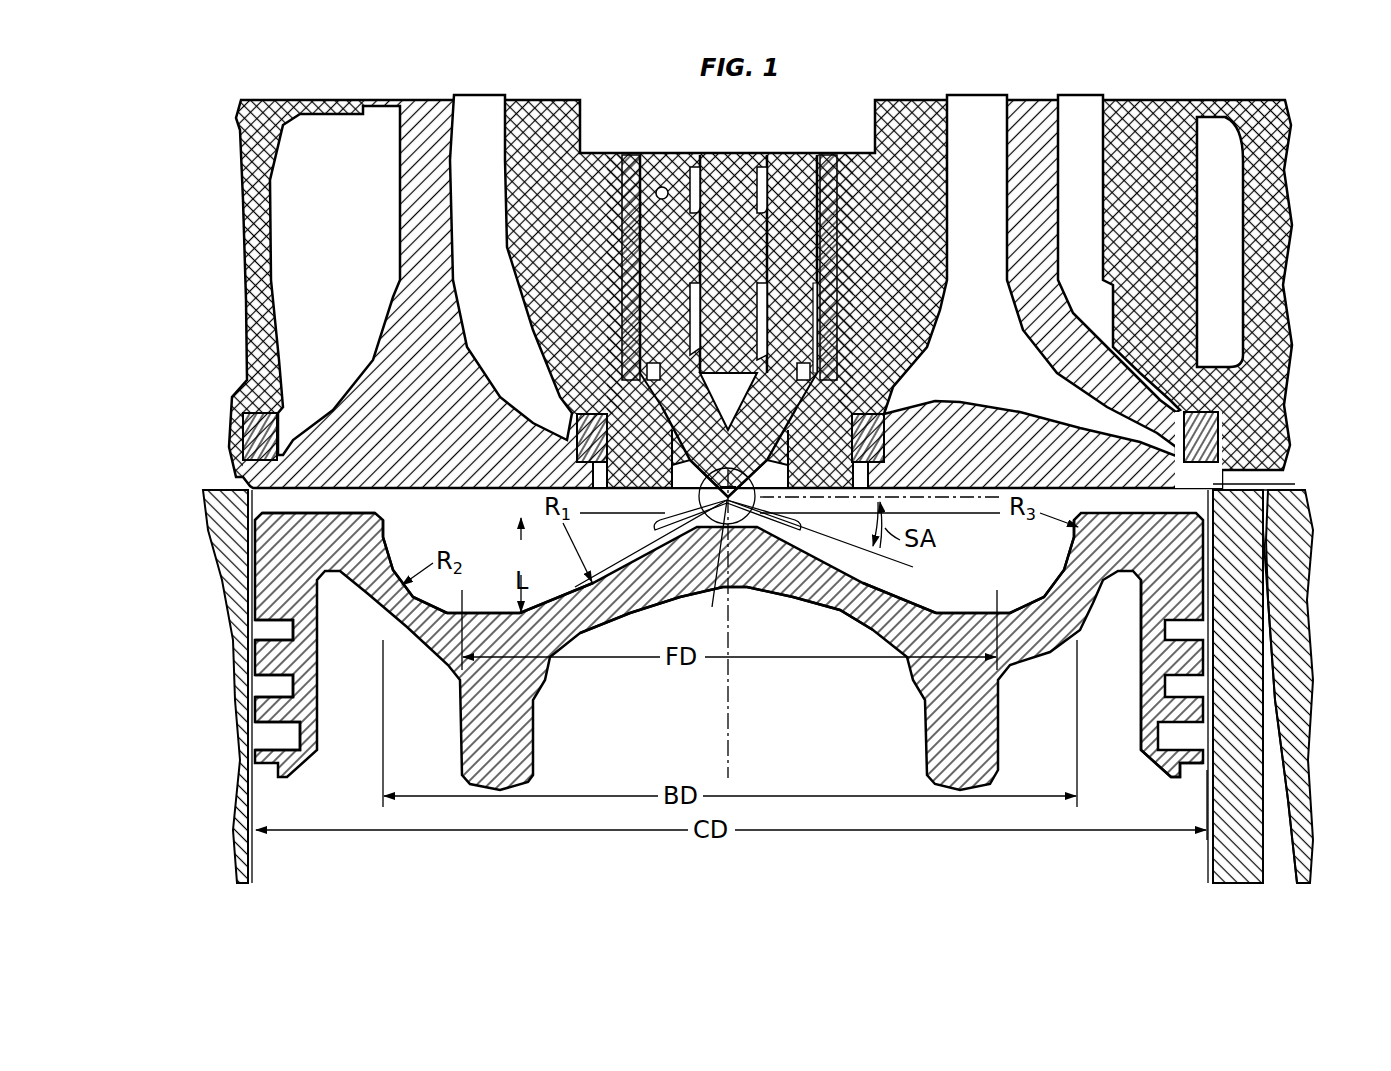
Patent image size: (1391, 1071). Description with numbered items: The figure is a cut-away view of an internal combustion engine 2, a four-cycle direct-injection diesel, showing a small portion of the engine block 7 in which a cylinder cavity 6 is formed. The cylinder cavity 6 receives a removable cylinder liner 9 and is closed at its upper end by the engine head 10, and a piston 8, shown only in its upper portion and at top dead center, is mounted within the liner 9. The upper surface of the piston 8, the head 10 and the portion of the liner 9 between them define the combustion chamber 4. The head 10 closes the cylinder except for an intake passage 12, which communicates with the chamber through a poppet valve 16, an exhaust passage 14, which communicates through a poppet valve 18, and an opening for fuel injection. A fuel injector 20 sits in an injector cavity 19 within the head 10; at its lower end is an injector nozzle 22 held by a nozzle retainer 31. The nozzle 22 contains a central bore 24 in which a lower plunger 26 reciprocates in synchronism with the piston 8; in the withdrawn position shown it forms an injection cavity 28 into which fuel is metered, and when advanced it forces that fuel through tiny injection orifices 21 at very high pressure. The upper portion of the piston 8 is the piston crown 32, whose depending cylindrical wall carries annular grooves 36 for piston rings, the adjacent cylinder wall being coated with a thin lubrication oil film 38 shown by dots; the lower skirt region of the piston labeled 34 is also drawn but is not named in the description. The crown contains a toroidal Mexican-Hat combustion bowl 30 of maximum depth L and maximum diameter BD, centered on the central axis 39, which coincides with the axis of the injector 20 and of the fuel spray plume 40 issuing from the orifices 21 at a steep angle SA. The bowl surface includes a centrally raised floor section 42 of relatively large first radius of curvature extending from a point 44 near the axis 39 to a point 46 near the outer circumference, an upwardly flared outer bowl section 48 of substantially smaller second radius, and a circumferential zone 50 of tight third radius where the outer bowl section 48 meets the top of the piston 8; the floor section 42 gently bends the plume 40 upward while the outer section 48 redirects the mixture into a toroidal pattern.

The internal combustion engine 2 is at (240, 470).
The combustion chamber 4 is at (729, 641).
The cylinder cavity 6 is at (1225, 484).
The engine block 7 is at (1298, 590).
The piston 8 is at (805, 607).
The cylinder liner 9 is at (1268, 556).
The engine head 10 is at (250, 273).
The intake passage 12 is at (335, 280).
The exhaust passage 14 is at (1030, 275).
The poppet valve 16 is at (440, 342).
The poppet valve 18 is at (1046, 302).
The injector cavity 19 is at (808, 385).
The fuel injector 20 is at (835, 245).
The injection orifices 21 is at (712, 571).
The injector nozzle 22 is at (800, 300).
The central bore 24 is at (695, 318).
The lower plunger 26 is at (705, 236).
The injection cavity 28 is at (727, 457).
The combustion bowl 30 is at (728, 570).
The nozzle retainer 31 is at (820, 333).
The piston crown 32 is at (1218, 508).
The piston skirt 34 is at (1150, 704).
The annular grooves 36 is at (263, 737).
The lubrication oil film 38 is at (247, 508).
The central axis 39 is at (735, 743).
The fuel spray plume 40 is at (705, 504).
The raised floor section 42 is at (578, 585).
The point adjacent central axis 44 is at (665, 528).
The point adjacent outer circumference 46 is at (462, 650).
The outer bowl section 48 is at (392, 553).
The circumferential zone 50 is at (383, 514).